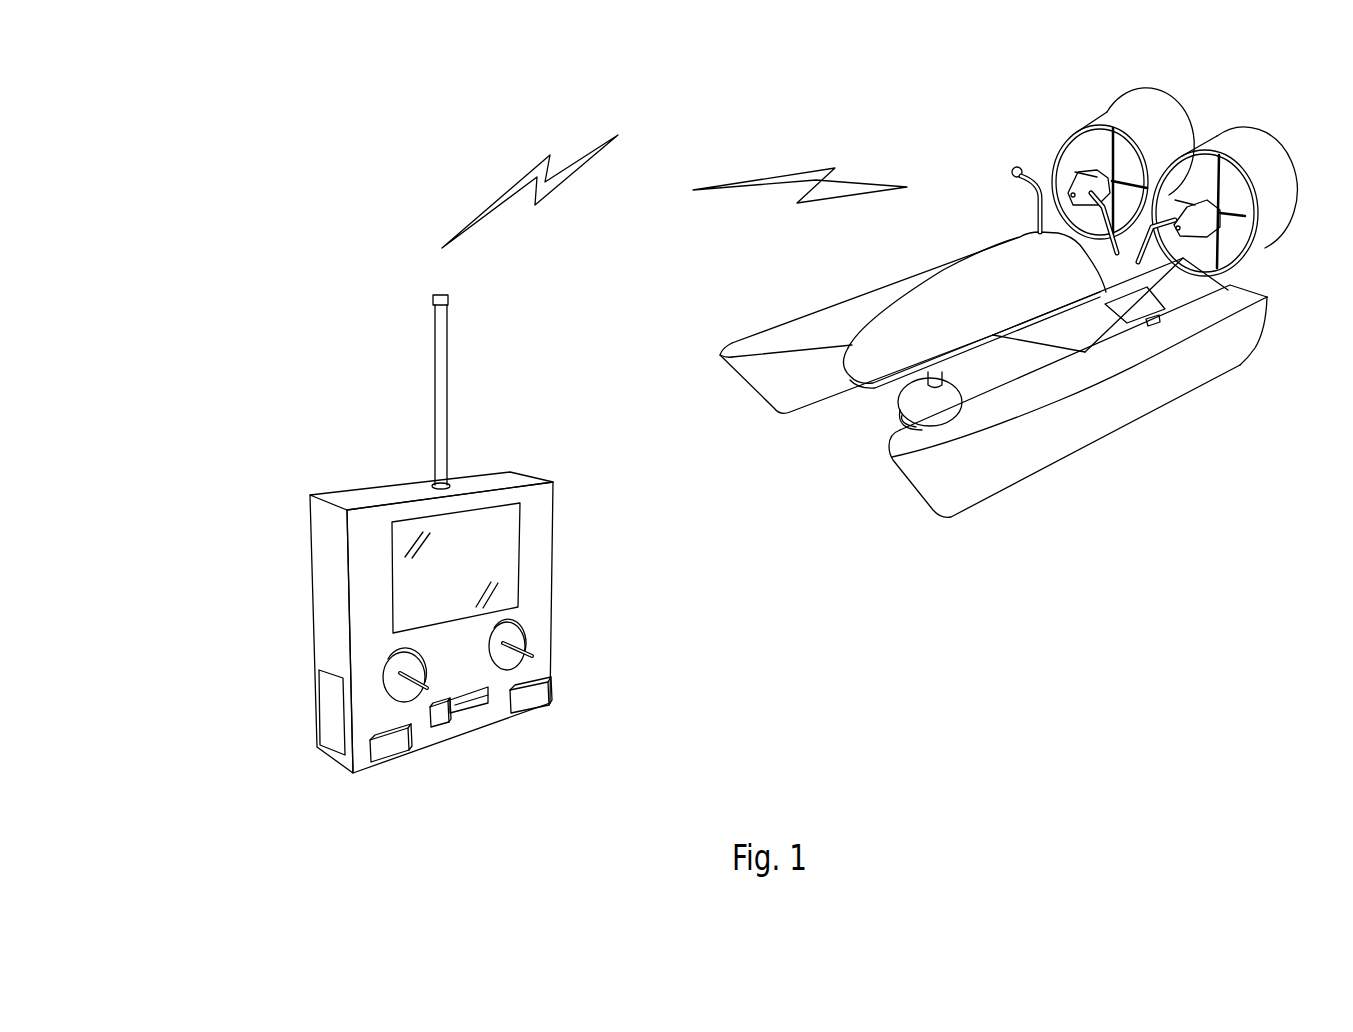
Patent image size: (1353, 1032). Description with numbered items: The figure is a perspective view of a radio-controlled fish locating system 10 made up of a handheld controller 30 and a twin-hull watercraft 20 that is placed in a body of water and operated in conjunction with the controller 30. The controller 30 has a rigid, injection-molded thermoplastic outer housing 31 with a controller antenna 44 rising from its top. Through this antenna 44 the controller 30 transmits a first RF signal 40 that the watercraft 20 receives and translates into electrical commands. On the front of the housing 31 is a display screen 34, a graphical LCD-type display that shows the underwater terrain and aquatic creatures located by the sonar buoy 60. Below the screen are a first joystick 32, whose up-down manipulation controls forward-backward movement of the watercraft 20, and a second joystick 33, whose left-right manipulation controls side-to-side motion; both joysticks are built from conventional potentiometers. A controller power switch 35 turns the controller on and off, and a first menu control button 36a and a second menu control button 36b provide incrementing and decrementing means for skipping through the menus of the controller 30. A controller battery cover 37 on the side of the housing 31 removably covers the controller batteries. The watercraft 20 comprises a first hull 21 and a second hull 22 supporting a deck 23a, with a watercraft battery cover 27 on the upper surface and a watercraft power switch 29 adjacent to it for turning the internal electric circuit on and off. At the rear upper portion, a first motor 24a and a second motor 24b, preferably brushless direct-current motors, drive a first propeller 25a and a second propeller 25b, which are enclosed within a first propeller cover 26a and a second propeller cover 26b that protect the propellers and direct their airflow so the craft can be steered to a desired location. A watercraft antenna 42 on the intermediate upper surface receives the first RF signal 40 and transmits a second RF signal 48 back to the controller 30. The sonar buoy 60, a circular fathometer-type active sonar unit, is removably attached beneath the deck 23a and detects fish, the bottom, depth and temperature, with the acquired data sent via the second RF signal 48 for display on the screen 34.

The radio-controlled fish locating system 10 is at (283, 158).
The watercraft 20 is at (958, 527).
The first hull 21 is at (1058, 442).
The second hull 22 is at (783, 380).
The deck 23a is at (937, 290).
The first motor 24a is at (1075, 172).
The second motor 24b is at (1205, 222).
The first propeller 25a is at (1097, 130).
The second propeller 25b is at (1247, 217).
The first propeller cover 26a is at (1120, 125).
The second propeller cover 26b is at (1237, 145).
The watercraft battery cover 27 is at (1150, 302).
The watercraft power switch 29 is at (1153, 320).
The controller 30 is at (524, 782).
The outer housing 31 is at (323, 538).
The first joystick 32 is at (537, 652).
The second joystick 33 is at (383, 668).
The display screen 34 is at (510, 578).
The controller power switch 35 is at (447, 713).
The first menu control button 36a is at (385, 748).
The second menu control button 36b is at (523, 702).
The controller battery cover 37 is at (330, 723).
The first RF signal 40 is at (547, 195).
The watercraft antenna 42 is at (1010, 172).
The controller antenna 44 is at (445, 388).
The second RF signal 48 is at (798, 172).
The sonar buoy 60 is at (928, 384).